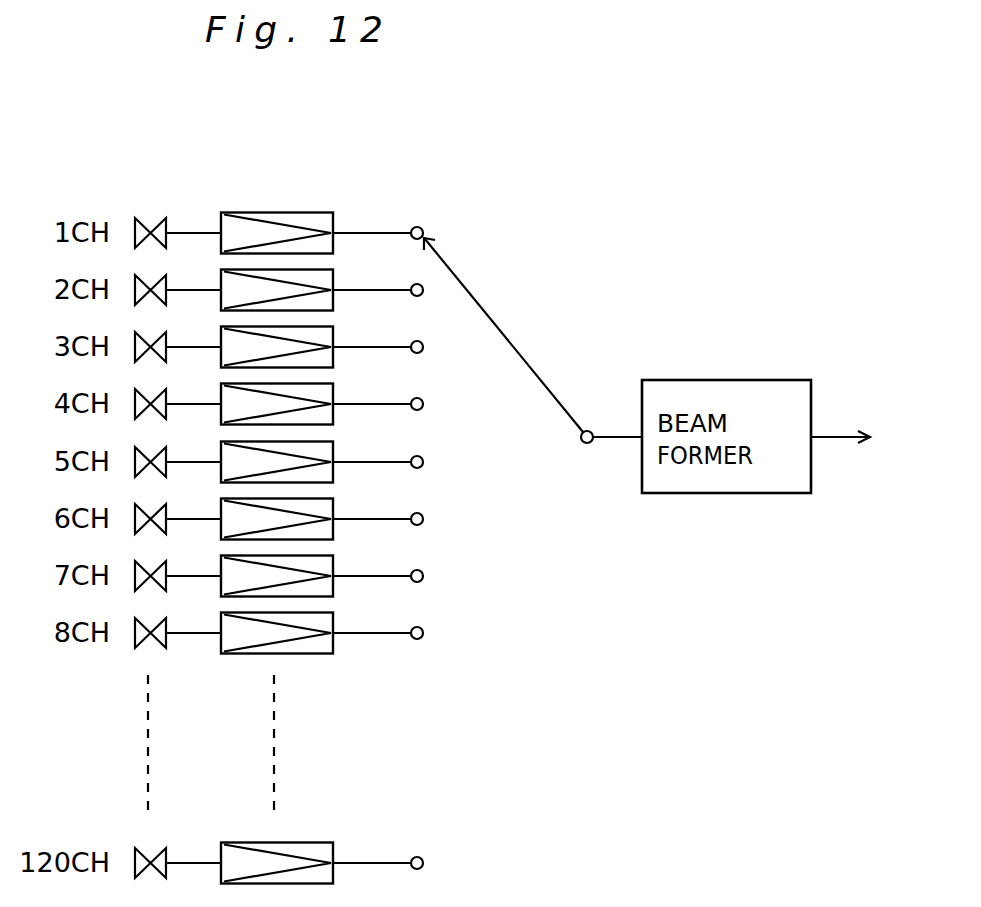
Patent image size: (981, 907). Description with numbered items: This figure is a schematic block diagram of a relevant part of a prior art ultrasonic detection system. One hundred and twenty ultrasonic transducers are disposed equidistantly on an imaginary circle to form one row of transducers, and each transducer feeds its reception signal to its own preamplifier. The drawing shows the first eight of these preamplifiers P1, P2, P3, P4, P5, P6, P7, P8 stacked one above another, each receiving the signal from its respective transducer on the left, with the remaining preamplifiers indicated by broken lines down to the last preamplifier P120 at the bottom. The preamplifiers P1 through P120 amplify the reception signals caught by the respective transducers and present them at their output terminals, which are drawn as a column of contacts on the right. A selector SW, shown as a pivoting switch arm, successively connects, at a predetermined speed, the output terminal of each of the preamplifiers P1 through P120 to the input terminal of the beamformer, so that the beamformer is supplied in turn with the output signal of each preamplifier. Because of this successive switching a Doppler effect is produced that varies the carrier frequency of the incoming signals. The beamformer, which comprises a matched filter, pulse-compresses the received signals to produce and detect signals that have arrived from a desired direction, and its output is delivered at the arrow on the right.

The preamplifier P1 is at (335, 213).
The preamplifier P2 is at (335, 270).
The preamplifier P3 is at (335, 327).
The preamplifier P4 is at (335, 384).
The preamplifier P5 is at (335, 442).
The preamplifier P6 is at (335, 499).
The preamplifier P7 is at (335, 556).
The preamplifier P8 is at (335, 613).
The preamplifier P120 is at (335, 843).
The selector SW is at (563, 327).